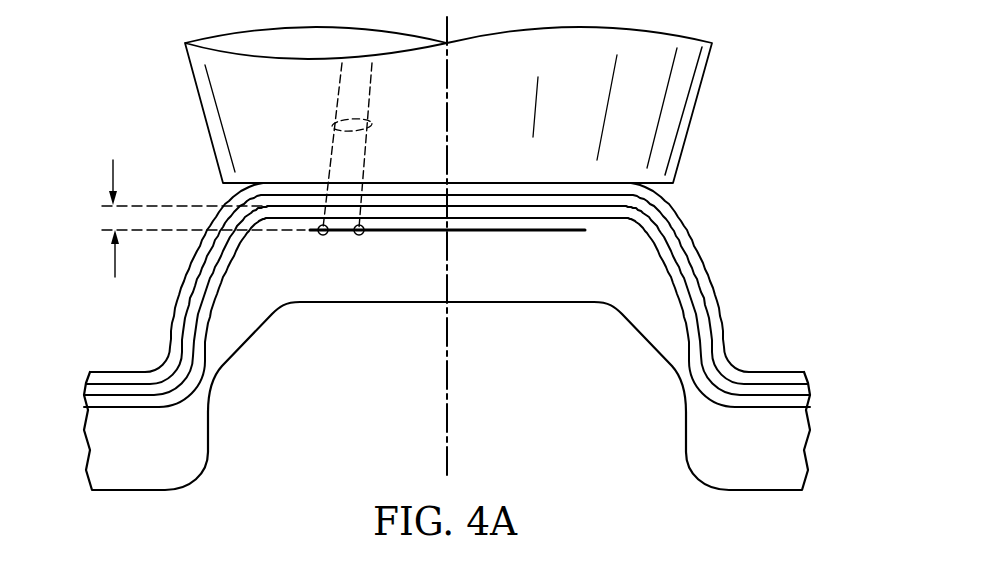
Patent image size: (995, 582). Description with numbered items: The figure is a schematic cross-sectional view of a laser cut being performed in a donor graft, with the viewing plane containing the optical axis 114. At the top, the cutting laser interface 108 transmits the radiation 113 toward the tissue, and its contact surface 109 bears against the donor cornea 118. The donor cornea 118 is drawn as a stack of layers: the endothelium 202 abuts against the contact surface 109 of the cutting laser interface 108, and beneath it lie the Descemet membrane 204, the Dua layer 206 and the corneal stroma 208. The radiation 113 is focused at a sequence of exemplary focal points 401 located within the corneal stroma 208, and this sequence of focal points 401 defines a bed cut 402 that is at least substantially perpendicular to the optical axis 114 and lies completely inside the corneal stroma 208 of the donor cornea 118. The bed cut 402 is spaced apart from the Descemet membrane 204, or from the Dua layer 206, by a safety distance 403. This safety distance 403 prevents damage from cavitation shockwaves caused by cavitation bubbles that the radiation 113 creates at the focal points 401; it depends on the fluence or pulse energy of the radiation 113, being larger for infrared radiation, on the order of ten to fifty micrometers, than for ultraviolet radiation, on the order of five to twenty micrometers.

The cutting laser interface 108 is at (207, 115).
The contact surface 109 is at (237, 188).
The radiation 113 is at (333, 125).
The optical axis 114 is at (448, 393).
The donor cornea 118 is at (475, 336).
The endothelium 202 is at (679, 233).
The Descemet membrane 204 is at (686, 267).
The Dua layer 206 is at (689, 300).
The corneal stroma 208 is at (565, 302).
The focal points 401 is at (359, 236).
The bed cut 402 is at (411, 233).
The safety distance 403 is at (113, 262).